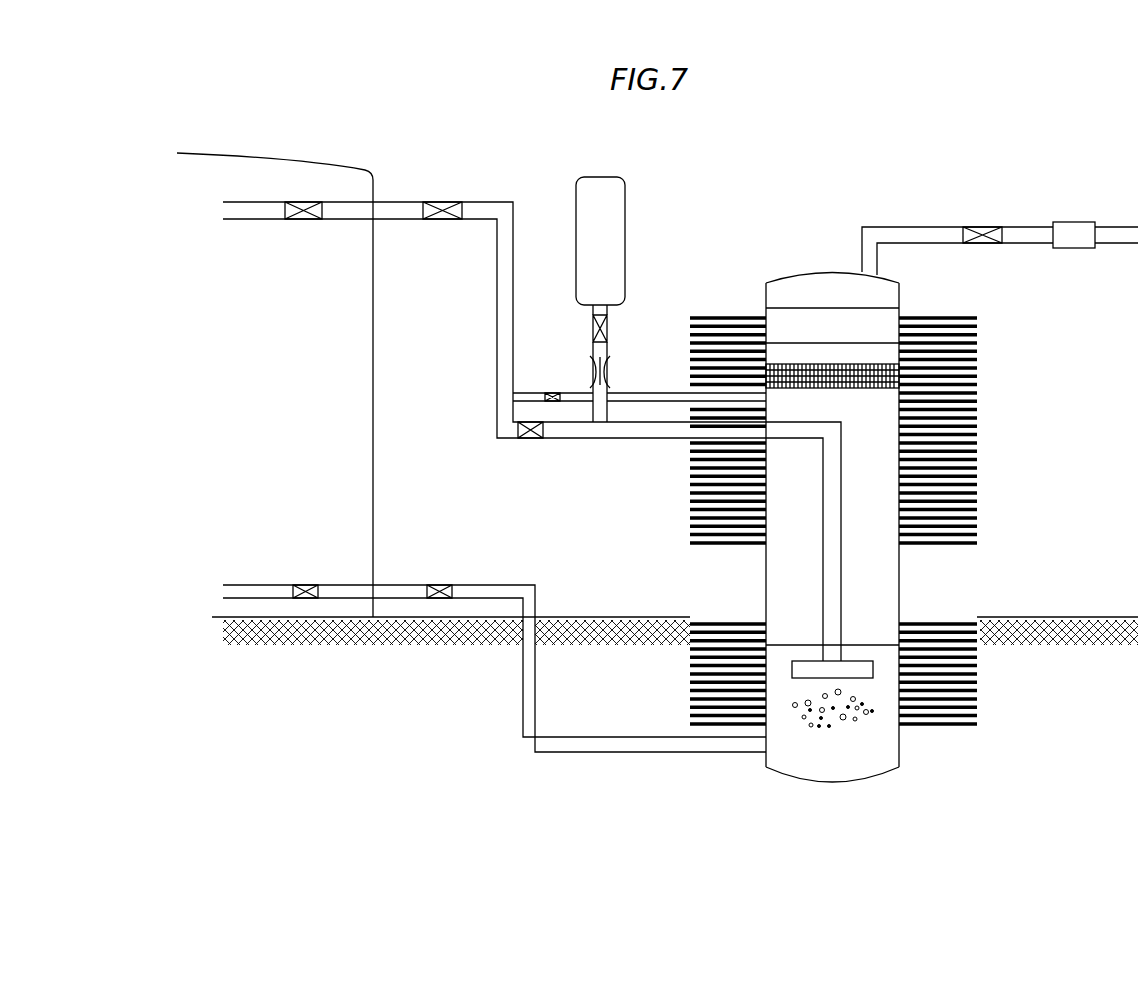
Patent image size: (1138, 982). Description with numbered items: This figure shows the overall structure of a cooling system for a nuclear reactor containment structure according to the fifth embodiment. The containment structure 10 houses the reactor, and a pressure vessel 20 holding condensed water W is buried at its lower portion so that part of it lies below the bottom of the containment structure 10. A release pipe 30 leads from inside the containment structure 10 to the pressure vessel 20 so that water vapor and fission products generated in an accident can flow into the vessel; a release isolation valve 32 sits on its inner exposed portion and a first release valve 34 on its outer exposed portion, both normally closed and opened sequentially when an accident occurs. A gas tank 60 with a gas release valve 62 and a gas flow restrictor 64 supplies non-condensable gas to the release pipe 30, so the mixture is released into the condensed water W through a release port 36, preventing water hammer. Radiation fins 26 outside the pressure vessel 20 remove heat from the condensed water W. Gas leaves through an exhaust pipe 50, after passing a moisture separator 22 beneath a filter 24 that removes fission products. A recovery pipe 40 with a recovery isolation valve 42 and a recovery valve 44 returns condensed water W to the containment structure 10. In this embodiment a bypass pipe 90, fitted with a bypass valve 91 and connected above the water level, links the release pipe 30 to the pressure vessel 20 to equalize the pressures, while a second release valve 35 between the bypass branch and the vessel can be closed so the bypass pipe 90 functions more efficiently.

The containment structure 10 is at (373, 272).
The pressure vessel 20 is at (899, 578).
The moisture separator 22 is at (900, 374).
The filter 24 is at (876, 312).
The radiation fins 26 is at (977, 456).
The release pipe 30 is at (497, 366).
The release isolation valve 32 is at (294, 221).
The first release valve 34 is at (430, 201).
The second release valve 35 is at (525, 439).
The release port 36 is at (800, 660).
The recovery pipe 40 is at (523, 706).
The recovery isolation valve 42 is at (298, 584).
The recovery valve 44 is at (432, 584).
The exhaust pipe 50 is at (908, 226).
The gas tank 60 is at (625, 200).
The gas release valve 62 is at (607, 325).
The gas flow restrictor 64 is at (610, 371).
The bypass pipe 90 is at (528, 392).
The bypass valve 91 is at (553, 402).
The condensed water W is at (899, 745).